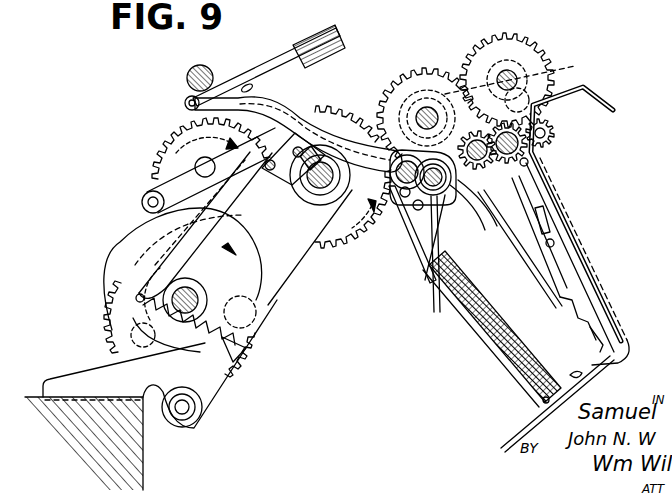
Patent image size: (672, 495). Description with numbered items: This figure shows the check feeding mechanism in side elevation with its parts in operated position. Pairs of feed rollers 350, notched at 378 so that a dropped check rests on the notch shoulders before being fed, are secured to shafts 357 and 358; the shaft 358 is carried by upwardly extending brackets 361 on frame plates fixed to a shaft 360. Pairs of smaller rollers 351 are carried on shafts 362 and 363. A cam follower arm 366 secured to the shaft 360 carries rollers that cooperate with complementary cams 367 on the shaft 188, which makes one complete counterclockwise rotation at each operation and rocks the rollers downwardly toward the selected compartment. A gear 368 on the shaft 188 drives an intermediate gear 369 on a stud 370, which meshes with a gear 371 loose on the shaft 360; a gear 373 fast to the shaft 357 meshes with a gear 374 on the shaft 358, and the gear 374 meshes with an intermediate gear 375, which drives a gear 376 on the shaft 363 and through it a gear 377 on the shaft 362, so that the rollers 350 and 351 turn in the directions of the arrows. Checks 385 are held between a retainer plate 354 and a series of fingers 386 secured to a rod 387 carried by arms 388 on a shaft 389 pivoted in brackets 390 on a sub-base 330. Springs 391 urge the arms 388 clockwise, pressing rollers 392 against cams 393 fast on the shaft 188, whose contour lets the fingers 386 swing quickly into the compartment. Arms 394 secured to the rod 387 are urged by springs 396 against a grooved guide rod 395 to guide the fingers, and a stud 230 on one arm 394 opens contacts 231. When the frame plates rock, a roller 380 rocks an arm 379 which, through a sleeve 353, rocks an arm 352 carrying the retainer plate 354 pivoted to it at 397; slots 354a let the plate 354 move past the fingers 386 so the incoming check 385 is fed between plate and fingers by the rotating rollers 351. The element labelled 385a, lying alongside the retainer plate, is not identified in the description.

The shaft 188 is at (186, 294).
The stud 230 is at (186, 102).
The contacts 231 is at (247, 85).
The sub-base 330 is at (97, 443).
The feed rollers 350 is at (430, 84).
The smaller rollers 351 is at (497, 205).
The arm 352 is at (552, 218).
The sleeve 353 is at (470, 303).
The retainer plate 354 is at (590, 328).
The slots 354a is at (552, 230).
The shaft 357 is at (420, 110).
The shaft 358 is at (513, 72).
The shaft 360 is at (325, 190).
The brackets 361 is at (537, 80).
The shaft 362 is at (443, 196).
The shaft 363 is at (530, 166).
The cam follower arm 366 is at (300, 262).
The complementary cams 367 is at (123, 260).
The gear 368 is at (103, 303).
The intermediate gear 369 is at (173, 140).
The stud 370 is at (195, 167).
The gear 371 is at (332, 104).
The gear 373 is at (392, 82).
The gear 374 is at (502, 34).
The intermediate gear 375 is at (556, 130).
The gear 376 is at (532, 182).
The gear 377 is at (440, 222).
The notch 378 is at (480, 44).
The arm 379 is at (421, 278).
The roller 380 is at (409, 255).
The checks 385 is at (480, 331).
The lever 385a is at (578, 316).
The fingers 386 is at (518, 240).
The rod 387 is at (380, 218).
The arms 388 is at (160, 258).
The shaft 389 is at (186, 412).
The brackets 390 is at (228, 390).
The springs 391 is at (238, 366).
The rollers 392 is at (113, 345).
The cams 393 is at (260, 302).
The arms 394 is at (308, 110).
The guide rod 395 is at (205, 68).
The springs 396 is at (366, 200).
The pivot 397 is at (556, 246).